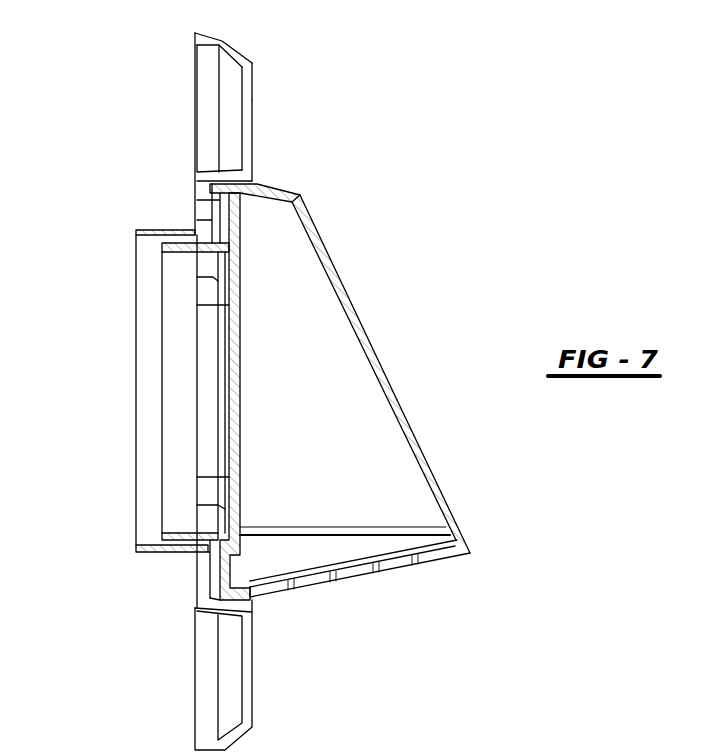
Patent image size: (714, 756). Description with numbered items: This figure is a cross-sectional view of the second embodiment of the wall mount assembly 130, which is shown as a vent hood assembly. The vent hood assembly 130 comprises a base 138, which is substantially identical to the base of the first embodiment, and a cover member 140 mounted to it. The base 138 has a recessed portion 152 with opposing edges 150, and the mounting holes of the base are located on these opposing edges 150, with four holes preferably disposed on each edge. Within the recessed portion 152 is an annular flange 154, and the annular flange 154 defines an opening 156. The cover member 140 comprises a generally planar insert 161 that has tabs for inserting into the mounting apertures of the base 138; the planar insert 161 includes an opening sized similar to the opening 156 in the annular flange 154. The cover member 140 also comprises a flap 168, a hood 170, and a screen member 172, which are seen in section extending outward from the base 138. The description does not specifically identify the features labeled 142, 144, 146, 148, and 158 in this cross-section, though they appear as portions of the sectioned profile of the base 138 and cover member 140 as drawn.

The wall mount assembly 130 is at (437, 100).
The base 138 is at (250, 120).
The cover member 140 is at (398, 392).
The panel outer edge 142 is at (250, 150).
The upper panel 144 is at (203, 114).
The panel corner 146 is at (250, 78).
The panel top edge 148 is at (222, 42).
The opposing edges 150 is at (217, 618).
The recessed portion 152 is at (195, 605).
The annular flange 154 is at (153, 553).
The opening 156 is at (197, 532).
The lower web 158 is at (197, 579).
The planar insert 161 is at (237, 227).
The flap 168 is at (237, 337).
The hood 170 is at (443, 493).
The screen member 172 is at (417, 560).